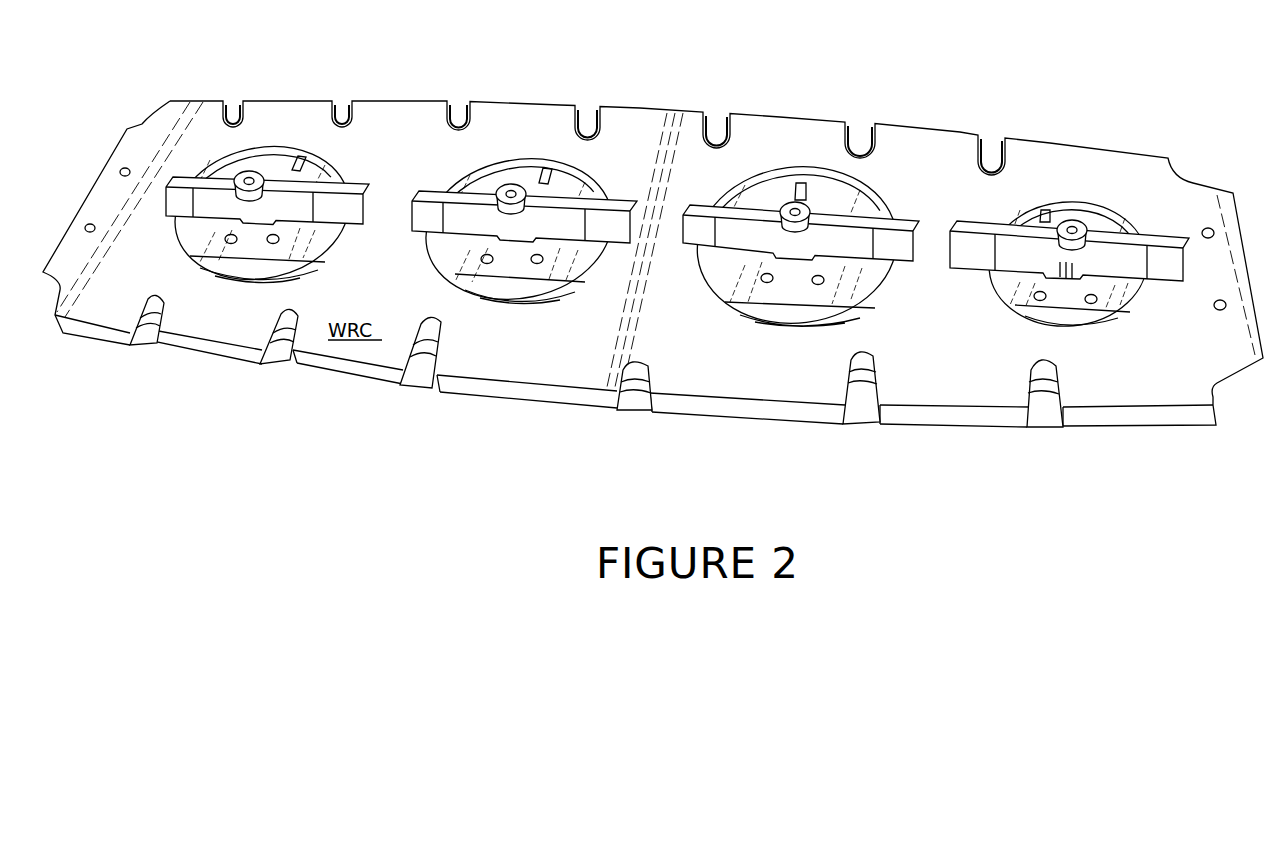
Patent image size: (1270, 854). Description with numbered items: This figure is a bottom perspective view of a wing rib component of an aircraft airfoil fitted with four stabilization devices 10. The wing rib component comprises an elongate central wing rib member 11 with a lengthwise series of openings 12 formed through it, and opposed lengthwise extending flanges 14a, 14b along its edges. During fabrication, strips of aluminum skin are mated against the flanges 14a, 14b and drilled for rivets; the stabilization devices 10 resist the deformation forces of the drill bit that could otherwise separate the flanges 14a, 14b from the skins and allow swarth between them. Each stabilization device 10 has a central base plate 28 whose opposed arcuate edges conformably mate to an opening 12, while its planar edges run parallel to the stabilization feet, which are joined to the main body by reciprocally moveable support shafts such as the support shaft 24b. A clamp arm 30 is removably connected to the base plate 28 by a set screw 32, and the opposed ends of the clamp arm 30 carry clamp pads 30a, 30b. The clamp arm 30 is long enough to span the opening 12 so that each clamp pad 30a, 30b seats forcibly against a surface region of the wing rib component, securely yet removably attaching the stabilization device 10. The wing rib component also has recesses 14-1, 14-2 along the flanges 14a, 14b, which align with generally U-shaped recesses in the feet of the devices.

The stabilization device 10 is at (190, 165).
The central wing rib member 11 is at (1195, 185).
The openings 12 is at (292, 150).
The flange 14a is at (492, 390).
The flange 14b is at (232, 105).
The recess 14-1 is at (146, 300).
The recess 14-2 is at (246, 104).
The support shaft 24b is at (306, 162).
The base plate 28 is at (262, 251).
The clamp arm 30 is at (300, 206).
The clamp pad 30a is at (168, 224).
The clamp pad 30b is at (348, 228).
The set screw 32 is at (252, 170).